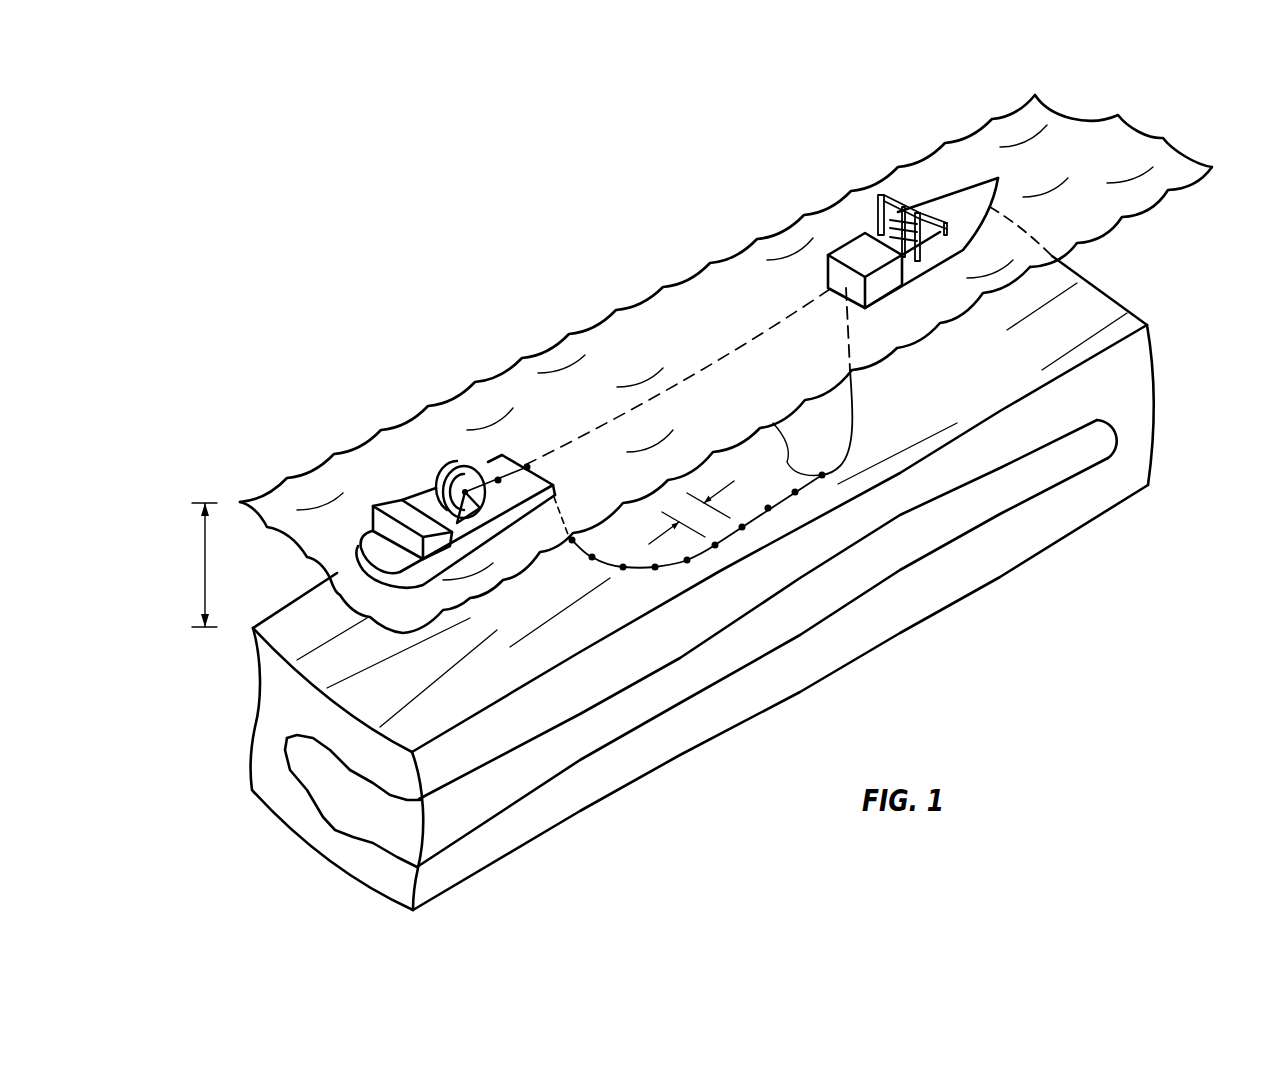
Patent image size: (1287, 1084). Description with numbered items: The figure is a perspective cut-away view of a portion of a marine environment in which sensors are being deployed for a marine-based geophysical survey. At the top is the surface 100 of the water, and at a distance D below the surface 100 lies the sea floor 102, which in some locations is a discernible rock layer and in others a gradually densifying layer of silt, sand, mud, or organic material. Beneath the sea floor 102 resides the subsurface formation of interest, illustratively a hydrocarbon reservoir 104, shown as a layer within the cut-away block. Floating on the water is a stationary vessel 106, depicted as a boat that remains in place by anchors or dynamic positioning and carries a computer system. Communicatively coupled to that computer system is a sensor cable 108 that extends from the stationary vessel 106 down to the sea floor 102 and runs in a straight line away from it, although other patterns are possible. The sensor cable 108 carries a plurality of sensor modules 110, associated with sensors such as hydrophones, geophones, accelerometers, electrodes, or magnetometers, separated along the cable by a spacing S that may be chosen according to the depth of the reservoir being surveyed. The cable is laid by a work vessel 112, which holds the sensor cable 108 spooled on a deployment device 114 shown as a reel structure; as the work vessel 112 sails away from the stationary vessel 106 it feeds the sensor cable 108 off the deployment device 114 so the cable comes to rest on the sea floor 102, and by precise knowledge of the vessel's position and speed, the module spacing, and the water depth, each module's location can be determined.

The surface of the water 100 is at (1110, 138).
The sea floor 102 is at (295, 640).
The hydrocarbon reservoir 104 is at (470, 818).
The stationary vessel 106 is at (850, 256).
The sensor cable 108 is at (882, 267).
The sensor modules 110 is at (822, 475).
The work vessel 112 is at (387, 497).
The deployment device 114 is at (450, 473).
The spacing S is at (655, 545).
The distance D is at (203, 568).